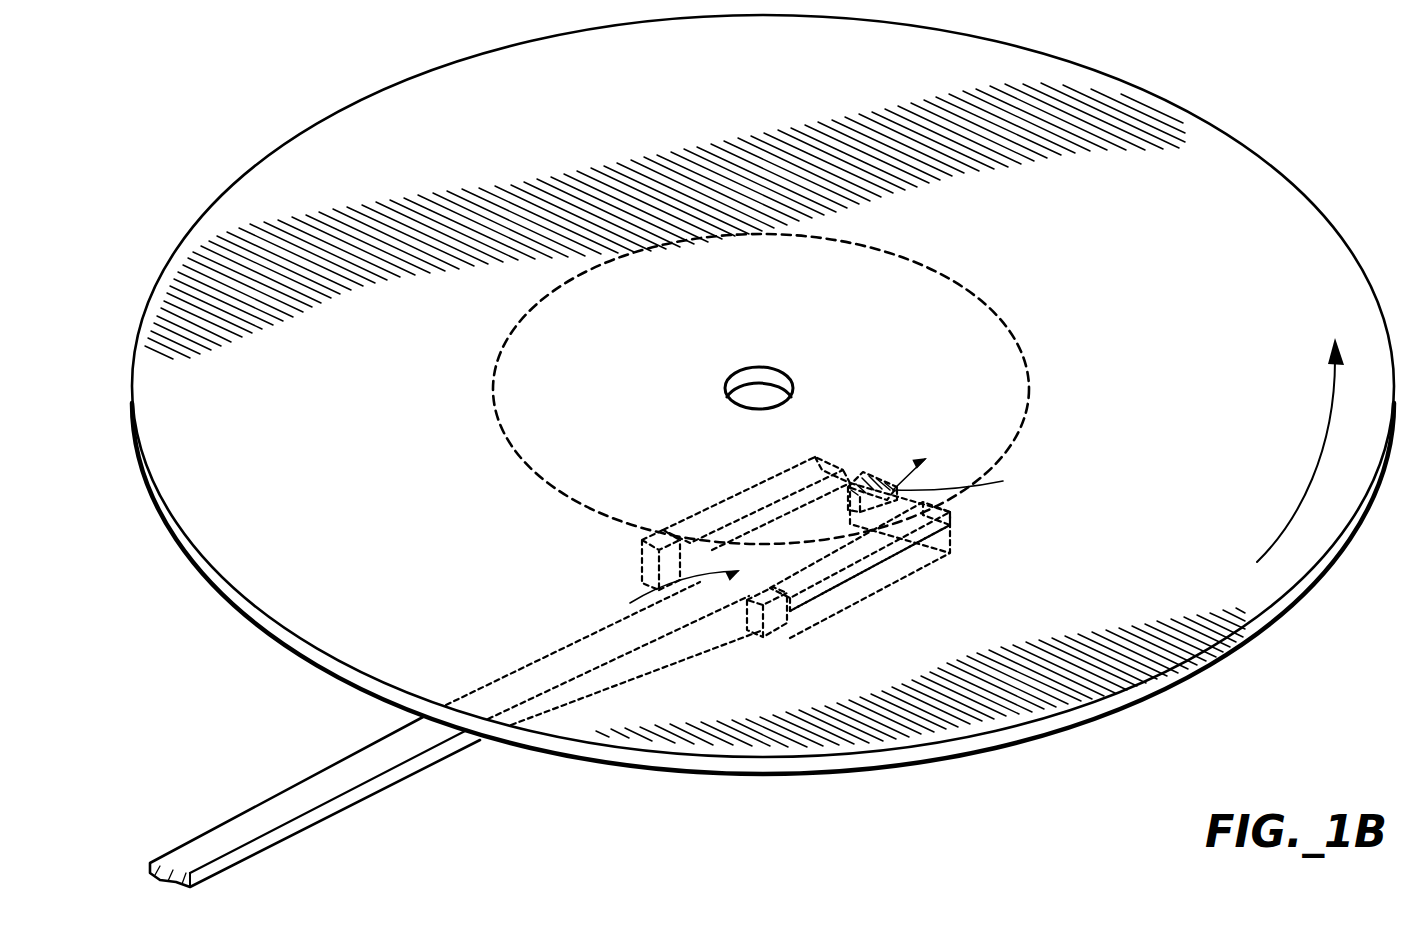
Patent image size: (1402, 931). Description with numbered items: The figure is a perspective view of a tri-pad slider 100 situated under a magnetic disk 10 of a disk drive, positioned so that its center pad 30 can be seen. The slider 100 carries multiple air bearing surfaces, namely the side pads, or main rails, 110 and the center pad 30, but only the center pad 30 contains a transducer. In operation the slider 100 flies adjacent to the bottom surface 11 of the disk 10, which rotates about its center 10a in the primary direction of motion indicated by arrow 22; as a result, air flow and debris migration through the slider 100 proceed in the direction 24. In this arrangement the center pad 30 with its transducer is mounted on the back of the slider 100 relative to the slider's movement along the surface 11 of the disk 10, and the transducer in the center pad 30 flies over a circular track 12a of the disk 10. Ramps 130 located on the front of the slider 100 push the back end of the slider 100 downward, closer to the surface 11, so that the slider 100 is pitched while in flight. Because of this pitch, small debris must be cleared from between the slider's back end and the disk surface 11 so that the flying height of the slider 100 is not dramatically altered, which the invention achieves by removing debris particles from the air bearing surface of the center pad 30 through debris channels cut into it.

The magnetic disk 10 is at (308, 128).
The center of disk 10a is at (760, 385).
The bottom surface of disk 11 is at (1007, 745).
The circular track 12a is at (993, 303).
The arrow indicating direction of disk rotation 22 is at (1293, 522).
The direction of air flow 24 is at (814, 536).
The center pad 30 is at (850, 480).
The tri-pad slider 100 is at (912, 578).
The side pads (main rails) 110 is at (757, 503).
The ramps 130 is at (642, 549).